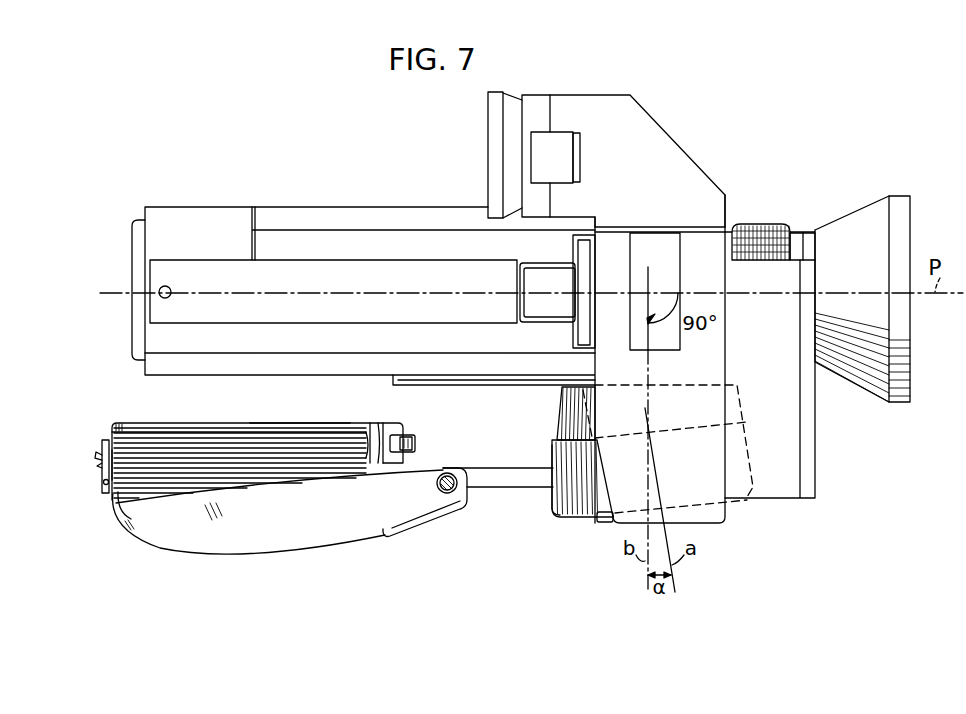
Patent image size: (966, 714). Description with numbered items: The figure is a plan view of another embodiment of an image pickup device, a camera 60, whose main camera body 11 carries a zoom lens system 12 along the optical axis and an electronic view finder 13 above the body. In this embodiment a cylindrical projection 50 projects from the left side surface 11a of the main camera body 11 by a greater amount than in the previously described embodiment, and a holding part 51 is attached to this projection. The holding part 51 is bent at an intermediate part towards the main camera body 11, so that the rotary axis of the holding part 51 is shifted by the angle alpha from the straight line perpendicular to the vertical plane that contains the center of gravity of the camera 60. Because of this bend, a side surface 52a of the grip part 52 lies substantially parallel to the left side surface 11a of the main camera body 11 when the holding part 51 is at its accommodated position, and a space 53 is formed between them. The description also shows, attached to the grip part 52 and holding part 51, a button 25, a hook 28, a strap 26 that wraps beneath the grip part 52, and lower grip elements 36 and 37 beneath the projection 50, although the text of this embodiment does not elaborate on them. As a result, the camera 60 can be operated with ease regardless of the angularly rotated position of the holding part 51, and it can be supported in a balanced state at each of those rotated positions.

The camera 60 is at (245, 138).
The main camera body 11 is at (325, 240).
The left side surface 11a is at (406, 387).
The electronic view finder 13 is at (675, 143).
The zoom lens system 12 is at (765, 224).
The cylindrical projection 50 is at (560, 416).
The grip pad 37 is at (575, 515).
The grip foot 36 is at (607, 522).
The holding part 51 is at (447, 523).
The grip part 52 is at (290, 472).
The side surface of grip part 52a is at (252, 421).
The space 53 is at (160, 401).
The release button 25 is at (415, 443).
The hook 28 is at (103, 469).
The hand strap 26 is at (280, 543).